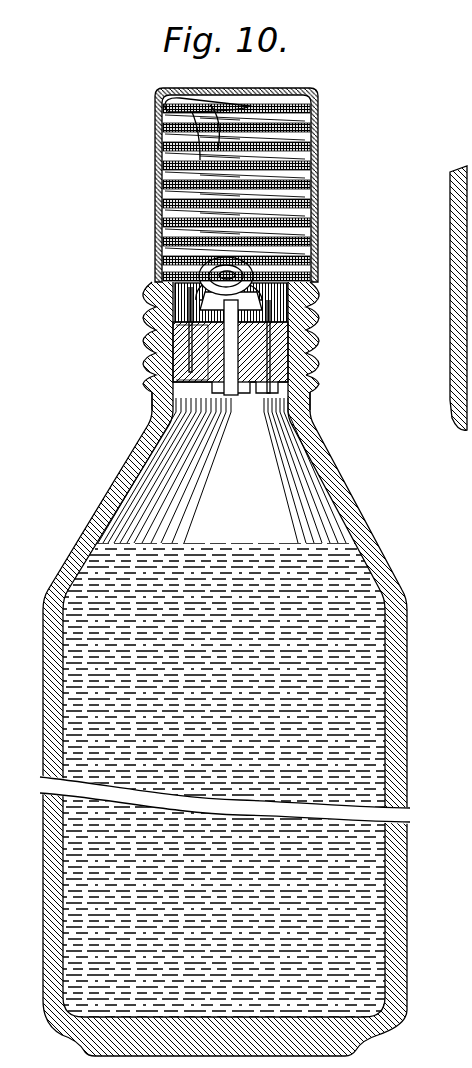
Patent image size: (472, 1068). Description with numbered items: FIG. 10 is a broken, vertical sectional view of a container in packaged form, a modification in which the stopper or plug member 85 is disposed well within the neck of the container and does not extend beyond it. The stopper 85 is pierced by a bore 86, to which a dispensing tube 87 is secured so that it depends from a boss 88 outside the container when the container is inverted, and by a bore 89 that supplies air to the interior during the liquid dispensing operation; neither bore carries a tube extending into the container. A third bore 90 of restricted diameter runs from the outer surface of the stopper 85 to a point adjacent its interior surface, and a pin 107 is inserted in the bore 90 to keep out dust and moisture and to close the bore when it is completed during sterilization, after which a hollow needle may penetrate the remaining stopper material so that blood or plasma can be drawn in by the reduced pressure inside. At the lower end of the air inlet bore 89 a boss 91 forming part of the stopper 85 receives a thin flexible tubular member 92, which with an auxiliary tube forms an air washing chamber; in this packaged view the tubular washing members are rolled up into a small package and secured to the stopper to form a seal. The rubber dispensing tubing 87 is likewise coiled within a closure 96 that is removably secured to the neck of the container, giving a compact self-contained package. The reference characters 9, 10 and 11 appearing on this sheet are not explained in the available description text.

The bottle 9 is at (376, 555).
The bottle neck 10 is at (307, 408).
The screw thread 11 is at (322, 336).
The stopper 85 is at (170, 328).
The bore 86 is at (309, 383).
The dispensing tube 87 is at (318, 207).
The boss 88 is at (290, 306).
The bore 89 is at (173, 379).
The third bore 90 is at (183, 347).
The boss 91 is at (212, 306).
The tubular member 92 is at (163, 258).
The closure 96 is at (157, 130).
The pin 107 is at (196, 302).